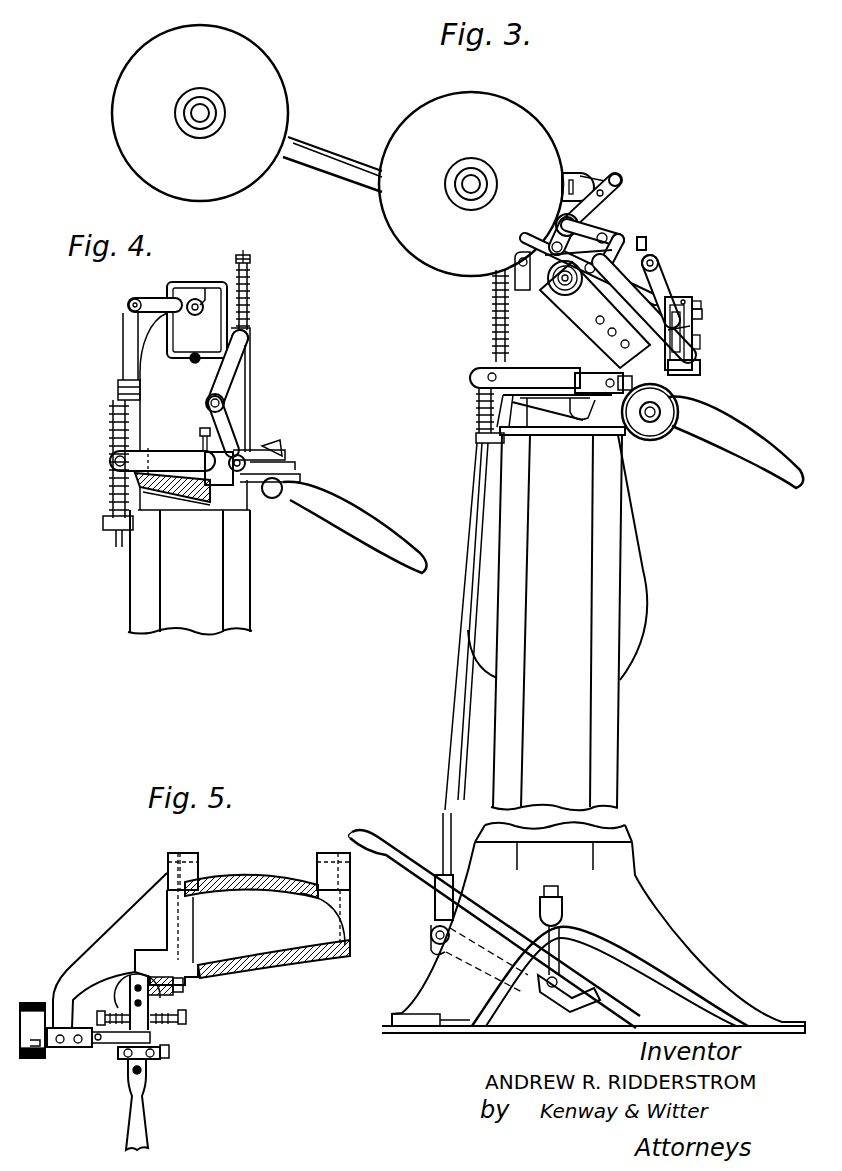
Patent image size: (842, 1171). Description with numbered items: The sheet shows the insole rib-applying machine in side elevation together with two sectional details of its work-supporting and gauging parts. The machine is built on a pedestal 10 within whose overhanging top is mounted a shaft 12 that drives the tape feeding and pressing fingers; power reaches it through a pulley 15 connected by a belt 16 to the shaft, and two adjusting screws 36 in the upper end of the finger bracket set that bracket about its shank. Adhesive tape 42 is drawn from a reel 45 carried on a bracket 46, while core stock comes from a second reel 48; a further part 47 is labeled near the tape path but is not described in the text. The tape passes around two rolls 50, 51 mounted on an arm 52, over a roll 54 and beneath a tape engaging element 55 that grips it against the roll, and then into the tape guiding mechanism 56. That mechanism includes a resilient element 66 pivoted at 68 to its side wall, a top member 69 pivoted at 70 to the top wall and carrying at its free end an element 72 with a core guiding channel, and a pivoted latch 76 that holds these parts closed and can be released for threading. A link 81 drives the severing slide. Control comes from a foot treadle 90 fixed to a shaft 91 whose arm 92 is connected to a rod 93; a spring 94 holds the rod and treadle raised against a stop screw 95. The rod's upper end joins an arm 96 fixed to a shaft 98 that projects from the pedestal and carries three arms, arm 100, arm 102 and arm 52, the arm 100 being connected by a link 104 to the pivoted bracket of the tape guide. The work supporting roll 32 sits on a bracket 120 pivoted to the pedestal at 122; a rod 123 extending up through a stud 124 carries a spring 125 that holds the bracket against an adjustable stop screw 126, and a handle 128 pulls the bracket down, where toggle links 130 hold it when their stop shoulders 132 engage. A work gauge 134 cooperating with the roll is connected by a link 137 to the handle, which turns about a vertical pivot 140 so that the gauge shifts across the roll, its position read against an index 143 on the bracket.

In FIG. 3, the pedestal 10 is at (558, 618).
In FIG. 4, the pedestal 10 is at (205, 632).
In FIG. 5, the pedestal 10 is at (293, 978).
In FIG. 3, the shaft 12 is at (568, 296).
In FIG. 3, the pulley 15 is at (652, 630).
In FIG. 3, the belt 16 is at (650, 528).
In FIG. 3, the work supporting roll 32 is at (659, 441).
In FIG. 5, the work supporting roll 32 is at (42, 1000).
In FIG. 3, the adjusting screws 36 is at (525, 290).
In FIG. 3, the adhesive tape 42 is at (297, 137).
In FIG. 3, the reel 45 is at (156, 50).
In FIG. 3, the bracket 46 is at (308, 168).
In FIG. 3, the bracket 47 is at (571, 170).
In FIG. 3, the reel 48 is at (428, 108).
In FIG. 3, the roll 50 is at (621, 178).
In FIG. 3, the roll 51 is at (606, 198).
In FIG. 3, the arm 52 is at (592, 178).
In FIG. 3, the roll 54 is at (660, 266).
In FIG. 3, the tape engaging element 55 is at (646, 243).
In FIG. 3, the tape guiding mechanism 56 is at (702, 313).
In FIG. 3, the resilient element 66 is at (690, 330).
In FIG. 3, the pivot 68 is at (676, 296).
In FIG. 3, the top member 69 is at (701, 305).
In FIG. 3, the pivot 70 is at (690, 300).
In FIG. 3, the element 72 is at (702, 368).
In FIG. 3, the pivoted latch 76 is at (700, 343).
In FIG. 3, the link 81 is at (657, 258).
In FIG. 3, the foot treadle 90 is at (376, 851).
In FIG. 3, the shaft 91 is at (528, 1000).
In FIG. 3, the arm 92 is at (440, 946).
In FIG. 3, the rod 93 is at (458, 722).
In FIG. 4, the rod 93 is at (110, 545).
In FIG. 3, the spring 94 is at (492, 340).
In FIG. 4, the spring 94 is at (110, 498).
In FIG. 4, the stop screw 95 is at (205, 290).
In FIG. 4, the arm 96 is at (130, 302).
In FIG. 3, the shaft 98 is at (592, 211).
In FIG. 4, the shaft 98 is at (193, 300).
In FIG. 3, the arm 100 is at (555, 226).
In FIG. 3, the arm 102 is at (612, 218).
In FIG. 3, the link 104 is at (628, 222).
In FIG. 3, the bracket 120 is at (553, 400).
In FIG. 4, the bracket 120 is at (180, 504).
In FIG. 5, the bracket 120 is at (130, 922).
In FIG. 3, the pivot 122 is at (478, 380).
In FIG. 4, the pivot 122 is at (110, 460).
In FIG. 5, the pivot 122 is at (318, 868).
In FIG. 4, the rod 123 is at (250, 302).
In FIG. 4, the stud 124 is at (250, 340).
In FIG. 4, the spring 125 is at (250, 266).
In FIG. 4, the adjustable stop screw 126 is at (200, 432).
In FIG. 3, the handle 128 is at (786, 480).
In FIG. 4, the handle 128 is at (372, 486).
In FIG. 5, the handle 128 is at (148, 1112).
In FIG. 4, the toggle links 130 is at (238, 418).
In FIG. 4, the stop shoulders 132 is at (206, 400).
In FIG. 5, the work gauge 134 is at (40, 1066).
In FIG. 4, the link 137 is at (292, 462).
In FIG. 5, the link 137 is at (105, 1045).
In FIG. 5, the vertical pivot 140 is at (168, 1006).
In FIG. 4, the index 143 is at (282, 450).